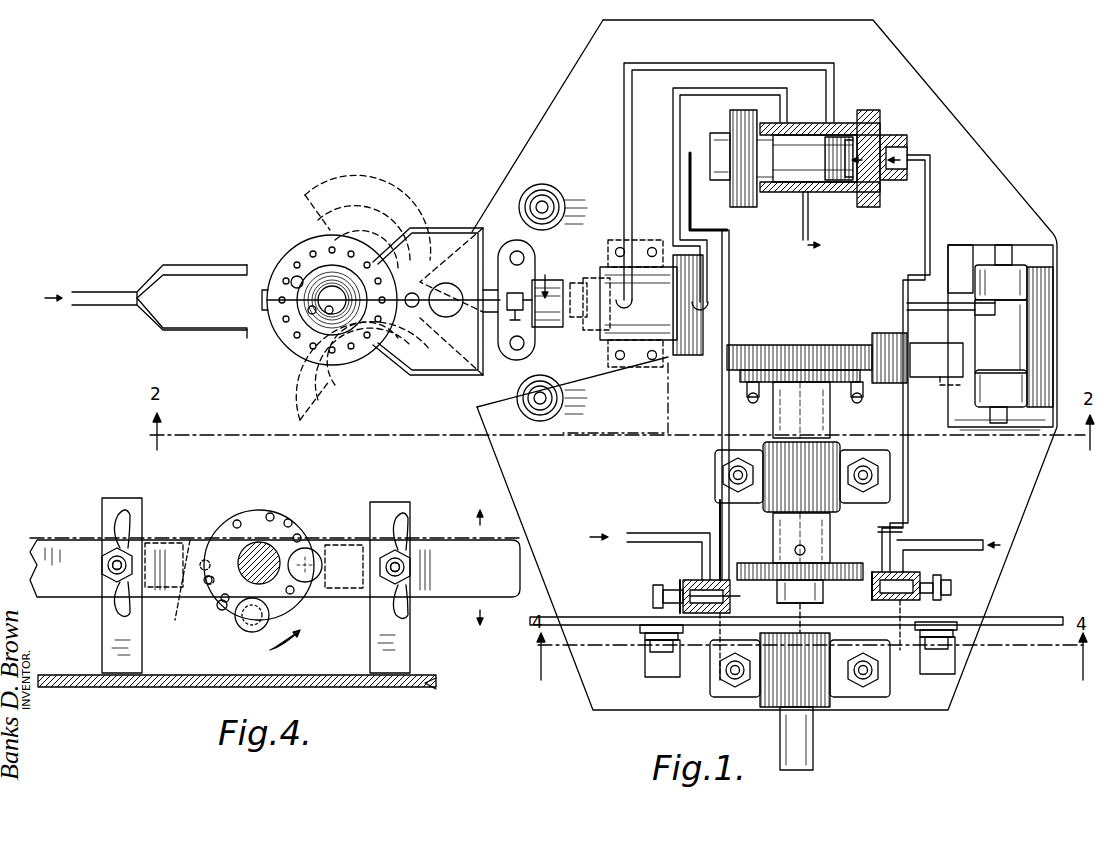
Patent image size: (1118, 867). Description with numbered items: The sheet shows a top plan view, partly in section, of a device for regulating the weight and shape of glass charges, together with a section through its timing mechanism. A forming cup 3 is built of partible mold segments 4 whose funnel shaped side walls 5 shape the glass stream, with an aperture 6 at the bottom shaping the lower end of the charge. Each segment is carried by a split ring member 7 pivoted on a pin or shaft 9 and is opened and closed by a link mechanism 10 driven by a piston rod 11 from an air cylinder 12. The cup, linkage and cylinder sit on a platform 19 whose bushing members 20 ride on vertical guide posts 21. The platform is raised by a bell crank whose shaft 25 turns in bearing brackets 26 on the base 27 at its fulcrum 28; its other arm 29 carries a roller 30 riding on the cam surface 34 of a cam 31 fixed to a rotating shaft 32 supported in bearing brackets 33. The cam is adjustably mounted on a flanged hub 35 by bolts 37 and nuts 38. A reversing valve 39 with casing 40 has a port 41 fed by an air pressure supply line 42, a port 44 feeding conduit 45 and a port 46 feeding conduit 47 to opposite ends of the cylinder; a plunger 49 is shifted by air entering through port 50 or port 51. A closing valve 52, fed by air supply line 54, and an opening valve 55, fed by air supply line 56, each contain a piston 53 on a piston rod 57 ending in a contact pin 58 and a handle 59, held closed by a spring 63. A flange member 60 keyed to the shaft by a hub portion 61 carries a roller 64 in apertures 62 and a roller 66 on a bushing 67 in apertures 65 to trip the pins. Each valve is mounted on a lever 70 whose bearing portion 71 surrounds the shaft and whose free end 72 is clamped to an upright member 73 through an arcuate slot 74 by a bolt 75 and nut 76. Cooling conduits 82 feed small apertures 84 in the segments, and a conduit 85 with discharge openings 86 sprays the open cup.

In FIG. 1, the forming cup 3 is at (268, 268).
In FIG. 1, the partible mold segments 4 is at (322, 255).
In FIG. 1, the funnel shaped side walls 5 is at (310, 312).
In FIG. 1, the opening or aperture 6 is at (328, 314).
In FIG. 1, the split ring member 7 is at (370, 180).
In FIG. 1, the pin or shaft 9 is at (444, 300).
In FIG. 1, the link mechanism 10 is at (510, 246).
In FIG. 1, the piston rod 11 is at (570, 320).
In FIG. 1, the air cylinder 12 is at (633, 336).
In FIG. 1, the platform 19 is at (578, 207).
In FIG. 1, the bushing members 20 is at (548, 198).
In FIG. 1, the vertical guide posts 21 is at (540, 206).
In FIG. 1, the shaft 25 is at (1003, 265).
In FIG. 1, the bearing brackets 26 is at (1023, 280).
In FIG. 1, the base 27 is at (1002, 196).
In FIG. 4, the base 27 is at (200, 688).
In FIG. 1, the fulcrum 28 is at (1025, 337).
In FIG. 1, the other arm 29 is at (950, 312).
In FIG. 1, the roller 30 is at (936, 364).
In FIG. 1, the cam 31 is at (885, 352).
In FIG. 1, the rotating shaft 32 is at (848, 742).
In FIG. 4, the rotating shaft 32 is at (255, 545).
In FIG. 1, the bearing brackets 33 is at (835, 462).
In FIG. 1, the cam surface 34 is at (775, 352).
In FIG. 1, the flanged hub 35 is at (775, 395).
In FIG. 1, the bolts 37 is at (750, 398).
In FIG. 1, the nuts 38 is at (747, 390).
In FIG. 1, the reversing valve 39 is at (852, 120).
In FIG. 1, the cylinder or casing 40 is at (795, 125).
In FIG. 1, the port 41 is at (800, 185).
In FIG. 1, the air pressure supply line 42 is at (800, 240).
In FIG. 1, the port 44 is at (838, 122).
In FIG. 1, the conduit 45 is at (735, 63).
In FIG. 1, the port 46 is at (785, 118).
In FIG. 1, the conduit 47 is at (755, 90).
In FIG. 1, the plunger 49 is at (880, 145).
In FIG. 1, the port 50 is at (925, 165).
In FIG. 1, the port 51 is at (708, 150).
In FIG. 1, the valve 52 is at (955, 585).
In FIG. 4, the valve 52 is at (340, 545).
In FIG. 1, the piston 53 is at (705, 612).
In FIG. 1, the air supply line 54 is at (975, 540).
In FIG. 1, the valve 55 is at (690, 575).
In FIG. 4, the valve 55 is at (165, 543).
In FIG. 1, the air supply line 56 is at (645, 533).
In FIG. 1, the piston rod 57 is at (722, 560).
In FIG. 1, the contact pin 58 is at (732, 592).
In FIG. 4, the contact pin 58 is at (263, 588).
In FIG. 1, the handle or gripping portion 59 is at (660, 592).
In FIG. 1, the flange member 60 is at (835, 572).
In FIG. 4, the flange member 60 is at (250, 511).
In FIG. 1, the hub portion 61 is at (830, 540).
In FIG. 4, the apertures 62 is at (290, 523).
In FIG. 1, the spring 63 is at (683, 585).
In FIG. 1, the roller or projection 64 is at (825, 590).
In FIG. 4, the roller or projection 64 is at (310, 582).
In FIG. 4, the apertures 65 is at (220, 610).
In FIG. 1, the roller or projection 66 is at (780, 598).
In FIG. 4, the roller or projection 66 is at (285, 648).
In FIG. 1, the bushing 67 is at (765, 568).
In FIG. 4, the bushing 67 is at (248, 632).
In FIG. 1, the lever or arm 70 is at (585, 628).
In FIG. 4, the lever or arm 70 is at (55, 540).
In FIG. 1, the bearing portion 71 is at (848, 628).
In FIG. 4, the bearing portion 71 is at (245, 552).
In FIG. 1, the free ends 72 is at (1063, 620).
In FIG. 4, the free ends 72 is at (275, 567).
In FIG. 1, the upright member 73 is at (648, 637).
In FIG. 4, the upright member 73 is at (104, 635).
In FIG. 4, the arcuate slot 74 is at (125, 515).
In FIG. 1, the bolt 75 is at (665, 660).
In FIG. 4, the bolt 75 is at (110, 566).
In FIG. 1, the nut 76 is at (650, 648).
In FIG. 4, the nut 76 is at (105, 552).
In FIG. 1, the conduits 82 is at (420, 228).
In FIG. 1, the small apertures 84 is at (292, 278).
In FIG. 1, the conduit 85 is at (105, 292).
In FIG. 1, the discharge openings 86 is at (216, 326).